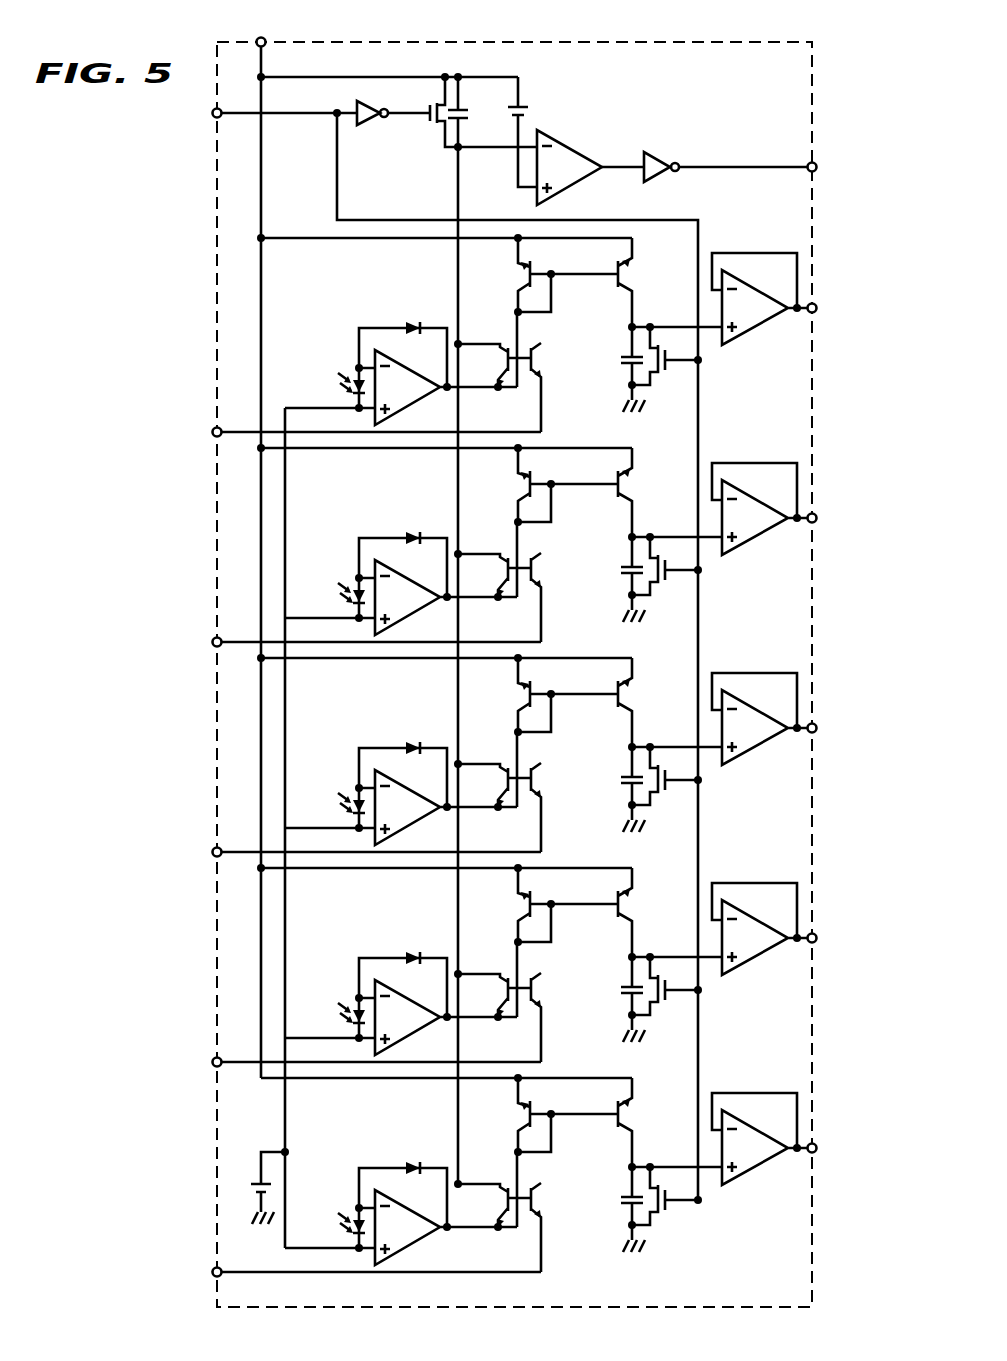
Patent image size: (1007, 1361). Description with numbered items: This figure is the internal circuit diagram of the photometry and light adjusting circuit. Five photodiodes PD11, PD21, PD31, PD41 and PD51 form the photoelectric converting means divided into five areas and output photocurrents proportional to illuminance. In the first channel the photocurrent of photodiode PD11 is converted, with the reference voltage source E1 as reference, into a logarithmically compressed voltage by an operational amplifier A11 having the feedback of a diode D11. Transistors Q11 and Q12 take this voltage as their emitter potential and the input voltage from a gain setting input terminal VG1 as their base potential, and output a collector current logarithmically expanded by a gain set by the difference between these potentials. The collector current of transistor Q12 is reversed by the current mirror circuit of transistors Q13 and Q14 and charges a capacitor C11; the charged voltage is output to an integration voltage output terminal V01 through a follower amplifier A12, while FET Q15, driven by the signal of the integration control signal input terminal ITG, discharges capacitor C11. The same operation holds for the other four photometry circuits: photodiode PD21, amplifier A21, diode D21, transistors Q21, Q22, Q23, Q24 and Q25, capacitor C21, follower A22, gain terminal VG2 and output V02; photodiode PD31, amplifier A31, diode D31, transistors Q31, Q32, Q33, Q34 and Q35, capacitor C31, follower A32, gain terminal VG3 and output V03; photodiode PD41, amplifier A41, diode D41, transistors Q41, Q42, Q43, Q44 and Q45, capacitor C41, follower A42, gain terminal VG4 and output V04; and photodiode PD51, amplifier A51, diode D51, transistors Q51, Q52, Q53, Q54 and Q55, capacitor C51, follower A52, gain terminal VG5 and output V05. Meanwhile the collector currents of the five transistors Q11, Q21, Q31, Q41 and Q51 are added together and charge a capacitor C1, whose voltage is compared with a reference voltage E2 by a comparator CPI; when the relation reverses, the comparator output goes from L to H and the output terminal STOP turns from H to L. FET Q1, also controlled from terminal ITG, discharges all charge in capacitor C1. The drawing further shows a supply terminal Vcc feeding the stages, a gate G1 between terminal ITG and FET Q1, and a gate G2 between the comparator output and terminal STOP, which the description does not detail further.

The power supply terminal Vcc is at (383, 45).
The integration control signal input terminal ITG is at (435, 649).
The inverter G1 is at (393, 102).
The FET Q1 is at (427, 112).
The capacitor C1 is at (469, 630).
The reference voltage E2 is at (531, 132).
The comparator CPI is at (551, 167).
The inverter G2 is at (661, 158).
The output terminal STOP is at (777, 168).
The reference voltage source E1 is at (258, 1186).
The transistor Q11 is at (492, 363).
The transistor Q12 is at (544, 372).
The current mirror circuit transistor Q13 is at (550, 275).
The current mirror circuit transistor Q14 is at (643, 282).
The FET Q15 is at (667, 363).
The capacitor C11 is at (616, 369).
The operational amplifier A11 is at (401, 387).
The follower amplifier A12 is at (764, 299).
The diode D11 is at (403, 340).
The photodiode PD11 is at (327, 388).
The gain setting input terminal VG1 is at (355, 434).
The integration voltage output terminal V01 is at (840, 309).
The transistor Q21 is at (492, 573).
The transistor Q22 is at (544, 582).
The current mirror circuit transistor Q23 is at (550, 485).
The current mirror circuit transistor Q24 is at (643, 492).
The FET Q25 is at (667, 573).
The capacitor C21 is at (616, 579).
The operational amplifier A21 is at (401, 597).
The follower amplifier A22 is at (764, 509).
The diode D21 is at (403, 550).
The photodiode PD21 is at (327, 598).
The gain setting input terminal VG2 is at (355, 644).
The integration voltage output terminal V02 is at (840, 519).
The transistor Q31 is at (492, 783).
The transistor Q32 is at (544, 792).
The current mirror circuit transistor Q33 is at (550, 695).
The current mirror circuit transistor Q34 is at (643, 702).
The FET Q35 is at (667, 783).
The capacitor C31 is at (616, 789).
The operational amplifier A31 is at (401, 807).
The follower amplifier A32 is at (764, 719).
The diode D31 is at (403, 760).
The photodiode PD31 is at (327, 808).
The gain setting input terminal VG3 is at (355, 854).
The integration voltage output terminal V03 is at (840, 729).
The transistor Q41 is at (492, 993).
The transistor Q42 is at (544, 1002).
The current mirror circuit transistor Q43 is at (550, 905).
The current mirror circuit transistor Q44 is at (643, 912).
The FET Q45 is at (667, 993).
The capacitor C41 is at (616, 999).
The operational amplifier A41 is at (401, 1017).
The follower amplifier A42 is at (764, 929).
The diode D41 is at (403, 970).
The photodiode PD41 is at (327, 1018).
The gain setting input terminal VG4 is at (355, 1064).
The integration voltage output terminal V04 is at (840, 939).
The transistor Q51 is at (492, 1203).
The transistor Q52 is at (544, 1212).
The current mirror circuit transistor Q53 is at (550, 1115).
The current mirror circuit transistor Q54 is at (643, 1122).
The FET Q55 is at (667, 1203).
The capacitor C51 is at (616, 1209).
The operational amplifier A51 is at (401, 1227).
The follower amplifier A52 is at (764, 1139).
The diode D51 is at (403, 1180).
The photodiode PD51 is at (327, 1228).
The gain setting input terminal VG5 is at (355, 1274).
The integration voltage output terminal V05 is at (840, 1149).